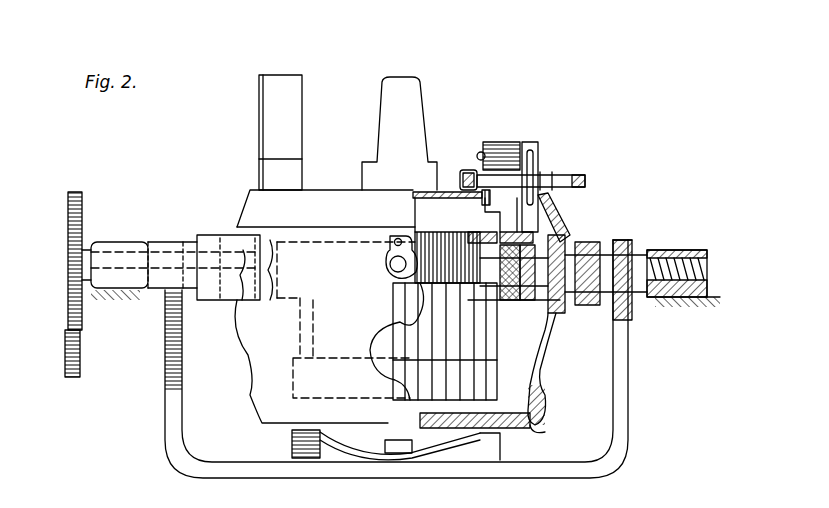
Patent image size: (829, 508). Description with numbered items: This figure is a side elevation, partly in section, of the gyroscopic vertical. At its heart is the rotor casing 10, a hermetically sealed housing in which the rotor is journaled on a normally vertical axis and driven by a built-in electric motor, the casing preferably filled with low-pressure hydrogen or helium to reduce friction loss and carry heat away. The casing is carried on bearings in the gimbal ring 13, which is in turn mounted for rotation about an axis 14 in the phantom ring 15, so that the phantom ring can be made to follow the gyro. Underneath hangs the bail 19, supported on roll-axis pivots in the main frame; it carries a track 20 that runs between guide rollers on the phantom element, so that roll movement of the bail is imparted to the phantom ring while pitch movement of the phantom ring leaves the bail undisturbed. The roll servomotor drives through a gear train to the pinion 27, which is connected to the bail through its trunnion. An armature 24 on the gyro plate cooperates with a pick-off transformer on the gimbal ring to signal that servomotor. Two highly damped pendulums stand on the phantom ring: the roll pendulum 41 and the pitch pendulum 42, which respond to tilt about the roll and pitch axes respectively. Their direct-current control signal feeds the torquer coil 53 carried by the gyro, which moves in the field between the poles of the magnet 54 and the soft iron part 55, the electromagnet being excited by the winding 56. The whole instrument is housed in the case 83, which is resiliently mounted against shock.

The rotor casing 10 is at (468, 345).
The gimbal ring 13 is at (500, 305).
The axis 14 is at (558, 225).
The phantom ring 15 is at (520, 428).
The bail 19 is at (241, 465).
The track 20 is at (350, 448).
The armature 24 is at (538, 145).
The pinion 27 is at (68, 215).
The roll pendulum 41 is at (290, 75).
The pitch pendulum 42 is at (410, 97).
The coil 53 is at (534, 155).
The magnet 54 is at (495, 142).
The soft iron part 55 is at (585, 180).
The winding 56 is at (462, 172).
The case 83 is at (715, 290).